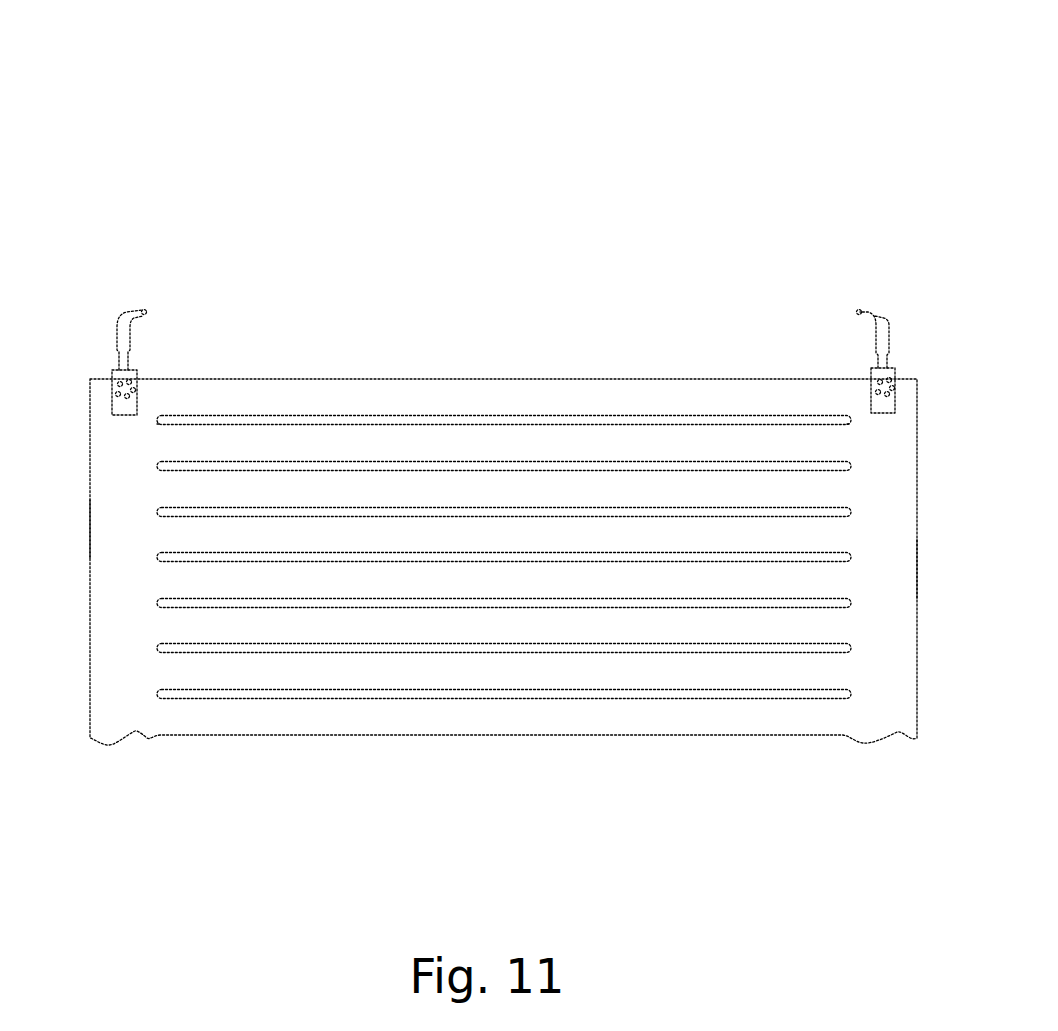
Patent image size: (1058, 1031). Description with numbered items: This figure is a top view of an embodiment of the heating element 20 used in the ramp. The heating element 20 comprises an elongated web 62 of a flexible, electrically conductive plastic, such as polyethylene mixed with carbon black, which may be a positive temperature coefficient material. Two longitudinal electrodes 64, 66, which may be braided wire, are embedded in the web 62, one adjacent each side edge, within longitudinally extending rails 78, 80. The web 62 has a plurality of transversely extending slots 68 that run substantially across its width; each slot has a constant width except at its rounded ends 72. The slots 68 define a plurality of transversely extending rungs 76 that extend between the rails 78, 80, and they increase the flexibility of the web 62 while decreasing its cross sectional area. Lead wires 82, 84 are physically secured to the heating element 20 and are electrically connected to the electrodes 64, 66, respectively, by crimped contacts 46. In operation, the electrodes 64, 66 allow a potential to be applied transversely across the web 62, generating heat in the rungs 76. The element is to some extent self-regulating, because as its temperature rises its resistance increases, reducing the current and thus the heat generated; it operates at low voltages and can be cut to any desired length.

The heating element 20 is at (400, 98).
The crimped contacts 46 is at (118, 370).
The elongated web 62 is at (125, 709).
The electrode 64 is at (121, 416).
The electrode 66 is at (877, 413).
The slots 68 is at (227, 513).
The rounded ends 72 is at (157, 419).
The rungs 76 is at (343, 495).
The rail 78 is at (122, 523).
The rail 80 is at (893, 563).
The lead wire 82 is at (128, 322).
The lead wire 84 is at (880, 318).